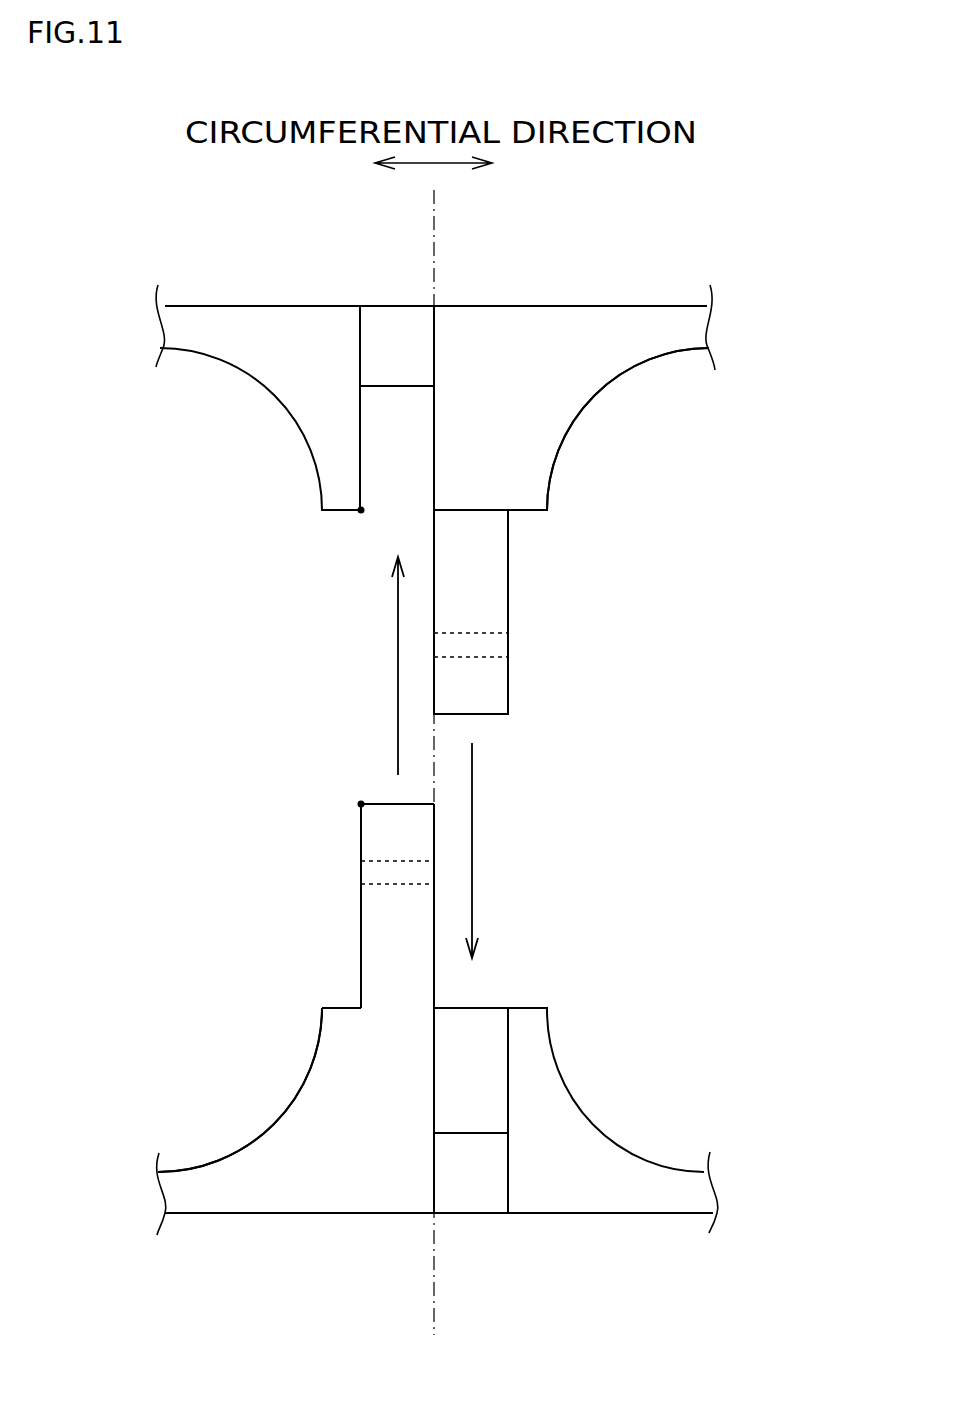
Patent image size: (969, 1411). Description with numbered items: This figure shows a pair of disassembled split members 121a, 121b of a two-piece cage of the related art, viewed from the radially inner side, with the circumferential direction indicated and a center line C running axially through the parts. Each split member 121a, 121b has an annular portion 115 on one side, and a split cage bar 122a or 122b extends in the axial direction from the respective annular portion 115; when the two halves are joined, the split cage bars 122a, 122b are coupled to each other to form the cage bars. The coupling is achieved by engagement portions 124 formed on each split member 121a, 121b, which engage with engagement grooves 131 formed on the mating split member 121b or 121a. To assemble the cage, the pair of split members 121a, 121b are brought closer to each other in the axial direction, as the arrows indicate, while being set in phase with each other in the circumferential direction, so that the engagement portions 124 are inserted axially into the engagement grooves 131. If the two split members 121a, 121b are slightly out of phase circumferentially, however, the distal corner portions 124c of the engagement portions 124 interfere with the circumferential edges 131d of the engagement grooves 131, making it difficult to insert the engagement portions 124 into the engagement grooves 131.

The annular portion 115 is at (670, 318).
The split member 121a is at (244, 1236).
The split member 121b is at (621, 284).
The split cage bar 122a is at (313, 1048).
The split cage bar 122b is at (553, 466).
The engagement portion 124 is at (530, 632).
The distal corner portion 124c is at (361, 804).
The engagement groove 131 is at (378, 322).
The circumferential edge 131d is at (361, 511).
The center line C is at (432, 1296).